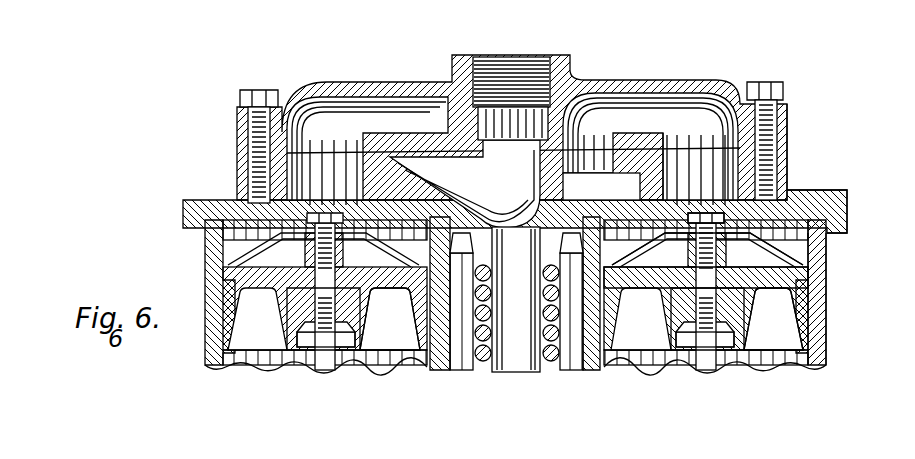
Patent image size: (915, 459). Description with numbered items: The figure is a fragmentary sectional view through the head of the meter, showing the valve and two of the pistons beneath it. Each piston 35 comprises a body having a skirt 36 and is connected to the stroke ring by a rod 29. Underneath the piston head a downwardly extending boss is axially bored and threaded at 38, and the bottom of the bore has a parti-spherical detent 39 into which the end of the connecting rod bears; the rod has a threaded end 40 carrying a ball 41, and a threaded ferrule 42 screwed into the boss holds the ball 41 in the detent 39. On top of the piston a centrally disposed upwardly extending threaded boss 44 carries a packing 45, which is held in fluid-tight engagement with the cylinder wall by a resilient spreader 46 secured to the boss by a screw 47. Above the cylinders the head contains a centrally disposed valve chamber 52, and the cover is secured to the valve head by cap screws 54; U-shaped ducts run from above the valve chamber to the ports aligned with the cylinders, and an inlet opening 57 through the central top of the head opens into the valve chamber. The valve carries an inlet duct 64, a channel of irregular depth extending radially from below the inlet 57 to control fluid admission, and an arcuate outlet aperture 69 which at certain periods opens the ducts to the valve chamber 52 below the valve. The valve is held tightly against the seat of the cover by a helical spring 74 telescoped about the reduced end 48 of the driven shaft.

The rod 29 is at (292, 333).
The piston 35 is at (787, 270).
The skirt 36 is at (827, 310).
The threaded bore 38 is at (365, 307).
The parti-spherical detent 39 is at (368, 289).
The threaded end 40 is at (740, 313).
The ball 41 is at (747, 290).
The threaded ferrule 42 is at (738, 333).
The threaded boss 44 is at (738, 215).
The packing 45 is at (757, 258).
The resilient spreader 46 is at (727, 233).
The screw 47 is at (772, 148).
The reduced end of driven shaft 48 is at (516, 299).
The valve chamber 52 is at (633, 186).
The cap screw 54 is at (255, 95).
The inlet opening 57 is at (521, 62).
The inlet duct 64 is at (505, 166).
The arcuate outlet aperture 69 is at (593, 165).
The helical spring 74 is at (516, 299).